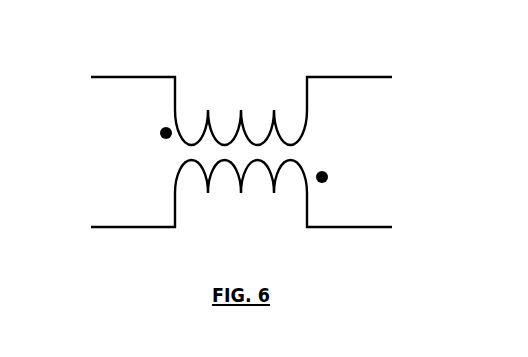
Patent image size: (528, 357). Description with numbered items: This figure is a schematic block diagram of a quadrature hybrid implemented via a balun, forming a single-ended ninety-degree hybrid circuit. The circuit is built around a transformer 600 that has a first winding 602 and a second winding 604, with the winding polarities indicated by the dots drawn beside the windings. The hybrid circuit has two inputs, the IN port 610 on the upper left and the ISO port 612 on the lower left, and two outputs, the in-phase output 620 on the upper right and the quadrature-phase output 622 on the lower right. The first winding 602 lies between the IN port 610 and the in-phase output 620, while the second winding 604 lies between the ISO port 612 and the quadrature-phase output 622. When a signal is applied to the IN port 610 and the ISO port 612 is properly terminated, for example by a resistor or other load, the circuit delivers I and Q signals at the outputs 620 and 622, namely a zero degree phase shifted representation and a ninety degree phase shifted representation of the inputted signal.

The transformer 600 is at (263, 53).
The first winding 602 is at (316, 92).
The second winding 604 is at (317, 212).
The IN port 610 is at (106, 71).
The ISO port 612 is at (107, 211).
The in-phase output 620 is at (402, 70).
The quadrature-phase output 622 is at (399, 211).